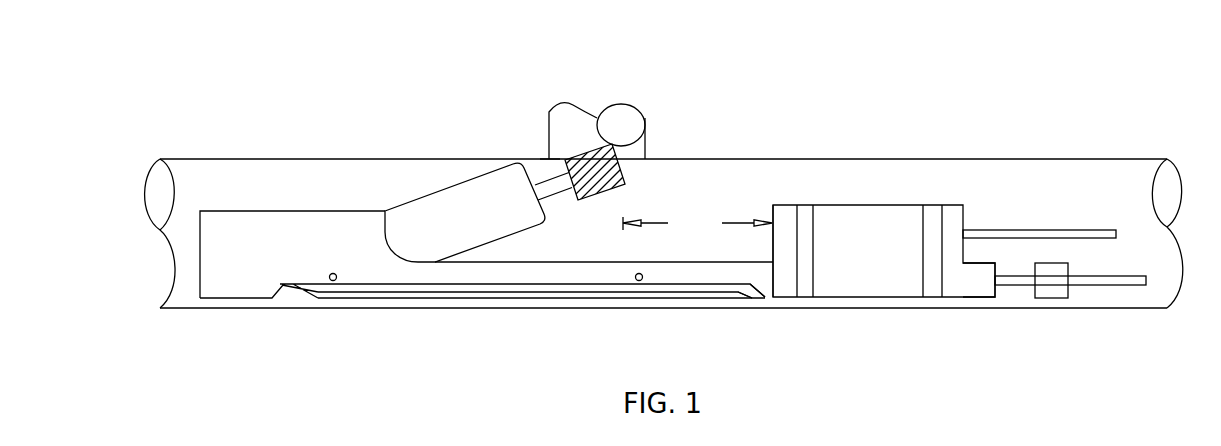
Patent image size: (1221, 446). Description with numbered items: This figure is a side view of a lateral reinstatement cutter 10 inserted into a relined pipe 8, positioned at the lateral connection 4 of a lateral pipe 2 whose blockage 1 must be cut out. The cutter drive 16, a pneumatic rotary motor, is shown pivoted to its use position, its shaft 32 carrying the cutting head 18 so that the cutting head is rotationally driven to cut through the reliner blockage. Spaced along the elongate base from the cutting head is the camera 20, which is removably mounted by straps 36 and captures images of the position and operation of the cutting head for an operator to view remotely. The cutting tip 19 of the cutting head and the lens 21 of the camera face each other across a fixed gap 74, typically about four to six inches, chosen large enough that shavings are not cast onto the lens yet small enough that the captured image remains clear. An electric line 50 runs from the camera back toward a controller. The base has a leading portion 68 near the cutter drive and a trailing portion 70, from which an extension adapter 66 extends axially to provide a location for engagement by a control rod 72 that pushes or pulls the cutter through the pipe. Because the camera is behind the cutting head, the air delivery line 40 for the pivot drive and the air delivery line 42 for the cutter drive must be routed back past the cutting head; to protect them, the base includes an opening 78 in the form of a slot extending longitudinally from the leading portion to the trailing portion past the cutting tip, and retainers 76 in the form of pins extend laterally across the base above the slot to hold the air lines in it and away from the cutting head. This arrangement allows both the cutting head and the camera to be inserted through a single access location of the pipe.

The blockage 1 is at (540, 142).
The lateral pipe 2 is at (570, 74).
The lateral connection 4 is at (620, 128).
The pipe 8 is at (1142, 142).
The lateral reinstatement cutter 10 is at (734, 177).
The cutter drive 16 is at (413, 176).
The cutting head 18 is at (643, 167).
The cutting tip 19 is at (647, 130).
The camera 20 is at (878, 185).
The lens 21 is at (772, 238).
The shaft 32 is at (541, 160).
The straps 36 is at (808, 185).
The air delivery line 40 is at (433, 298).
The air delivery line 42 is at (482, 292).
The electric line 50 is at (1066, 206).
The extension adapter 66 is at (1018, 302).
The leading portion 68 is at (225, 308).
The trailing portion 70 is at (973, 297).
The control rod 72 is at (1112, 302).
The gap 74 is at (697, 223).
The retainers 76 is at (333, 281).
The opening 78 is at (753, 314).